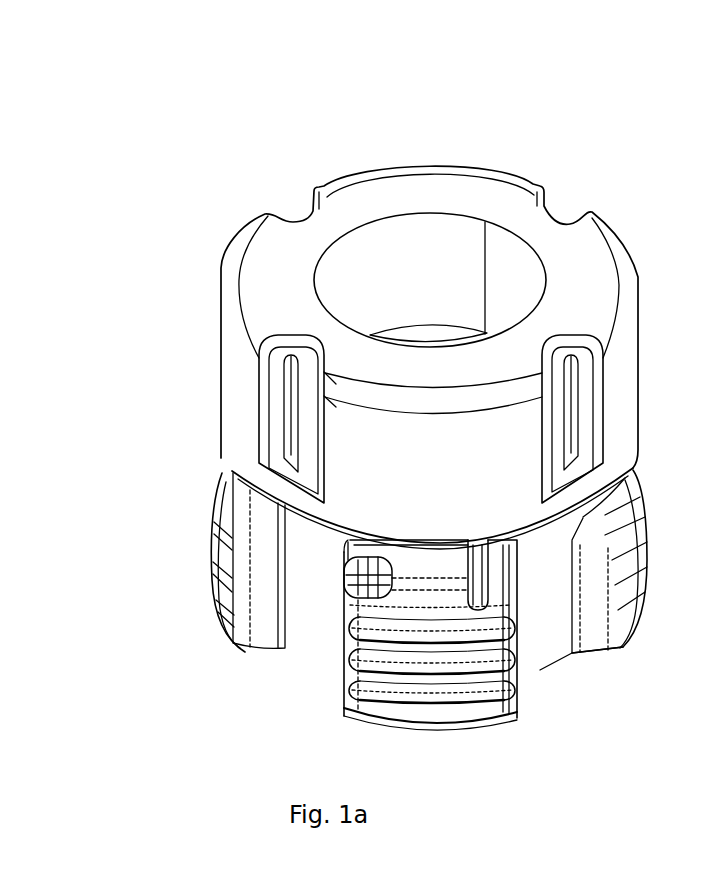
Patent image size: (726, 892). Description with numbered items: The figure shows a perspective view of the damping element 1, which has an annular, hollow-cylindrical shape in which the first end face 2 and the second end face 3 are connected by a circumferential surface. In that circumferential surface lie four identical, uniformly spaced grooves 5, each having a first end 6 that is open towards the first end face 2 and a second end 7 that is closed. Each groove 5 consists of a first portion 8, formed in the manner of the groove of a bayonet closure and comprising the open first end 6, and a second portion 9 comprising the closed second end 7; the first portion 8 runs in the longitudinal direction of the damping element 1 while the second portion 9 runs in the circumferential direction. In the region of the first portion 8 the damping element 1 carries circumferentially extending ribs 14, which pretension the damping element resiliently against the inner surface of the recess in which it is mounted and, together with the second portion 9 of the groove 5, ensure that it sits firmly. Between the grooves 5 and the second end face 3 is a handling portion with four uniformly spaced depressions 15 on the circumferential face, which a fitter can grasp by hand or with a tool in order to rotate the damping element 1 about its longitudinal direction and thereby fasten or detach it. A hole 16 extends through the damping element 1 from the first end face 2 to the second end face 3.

The damping element 1 is at (403, 74).
The first end face 2 is at (435, 723).
The second end face 3 is at (588, 268).
The groove 5 is at (442, 596).
The first end 6 is at (490, 728).
The second end 7 is at (618, 487).
The first portion 8 is at (560, 630).
The second portion 9 is at (593, 512).
The ribs 14 is at (424, 696).
The depressions 15 is at (303, 214).
The hole 16 is at (465, 247).